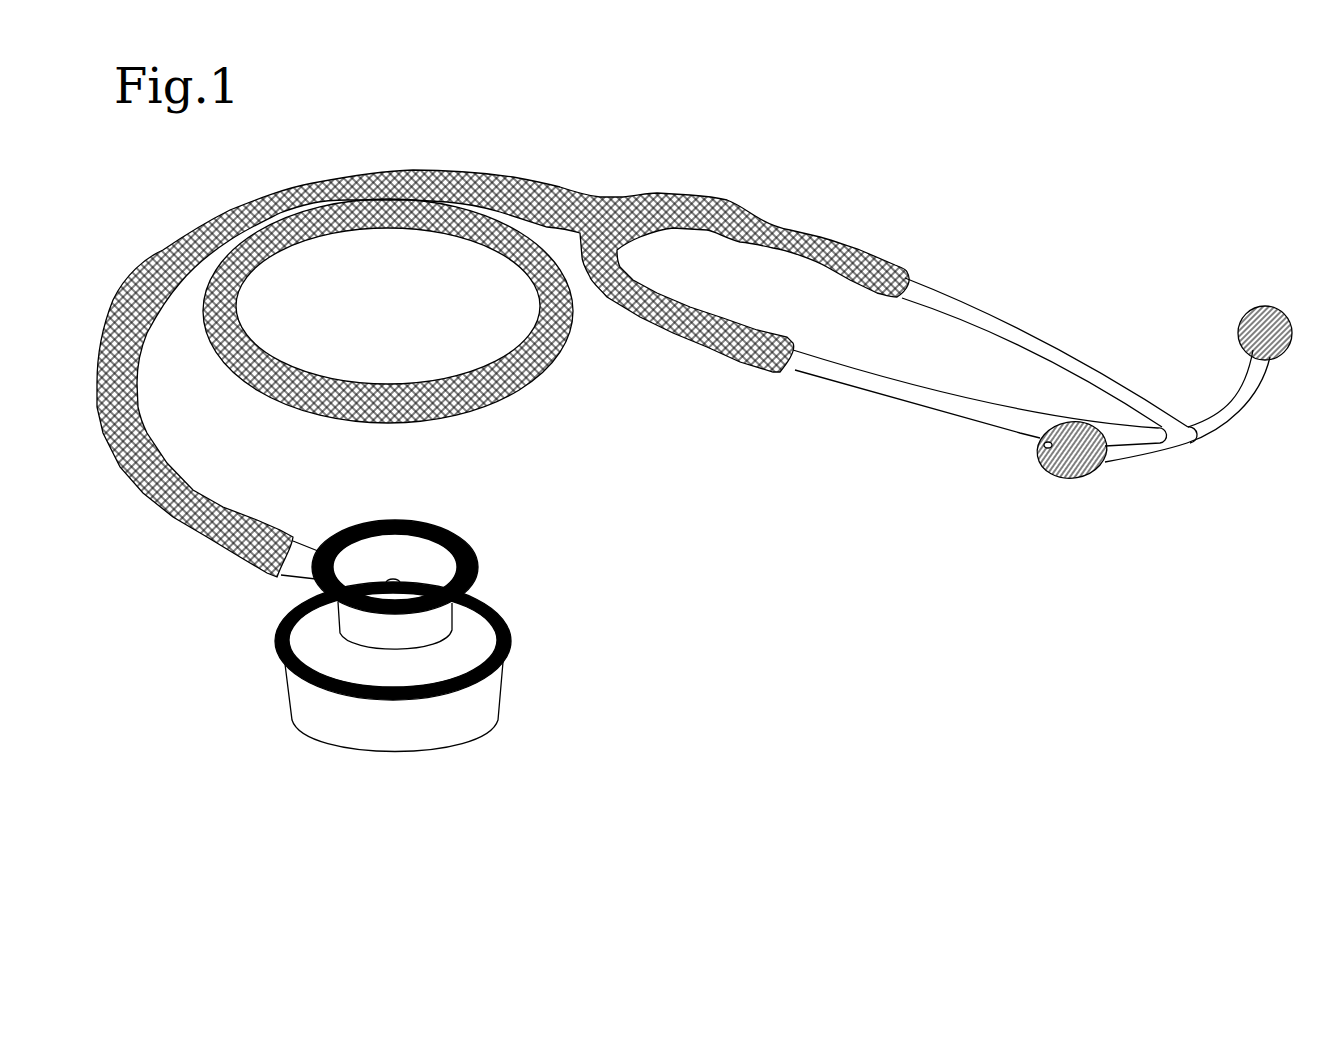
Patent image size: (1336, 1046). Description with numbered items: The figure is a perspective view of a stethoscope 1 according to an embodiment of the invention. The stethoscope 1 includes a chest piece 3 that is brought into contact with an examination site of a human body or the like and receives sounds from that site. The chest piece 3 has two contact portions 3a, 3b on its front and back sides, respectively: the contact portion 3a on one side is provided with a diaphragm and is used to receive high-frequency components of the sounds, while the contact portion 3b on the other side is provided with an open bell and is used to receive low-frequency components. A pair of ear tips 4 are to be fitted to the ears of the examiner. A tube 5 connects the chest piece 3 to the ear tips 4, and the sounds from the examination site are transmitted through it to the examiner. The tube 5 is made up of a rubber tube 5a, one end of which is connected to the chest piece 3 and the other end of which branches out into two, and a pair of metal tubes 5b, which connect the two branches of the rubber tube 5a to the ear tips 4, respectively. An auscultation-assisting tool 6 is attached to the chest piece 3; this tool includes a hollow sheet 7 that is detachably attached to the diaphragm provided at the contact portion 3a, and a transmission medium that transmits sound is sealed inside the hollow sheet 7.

The stethoscope 1 is at (905, 152).
The chest piece 3 is at (473, 618).
The contact portion 3a is at (507, 635).
The contact portion 3b is at (440, 540).
The ear tips 4 is at (1265, 307).
The tube 5 is at (562, 186).
The rubber tube 5a is at (503, 374).
The metal tubes 5b is at (1027, 337).
The auscultation-assisting tool 6 is at (394, 753).
The hollow sheet 7 is at (387, 722).